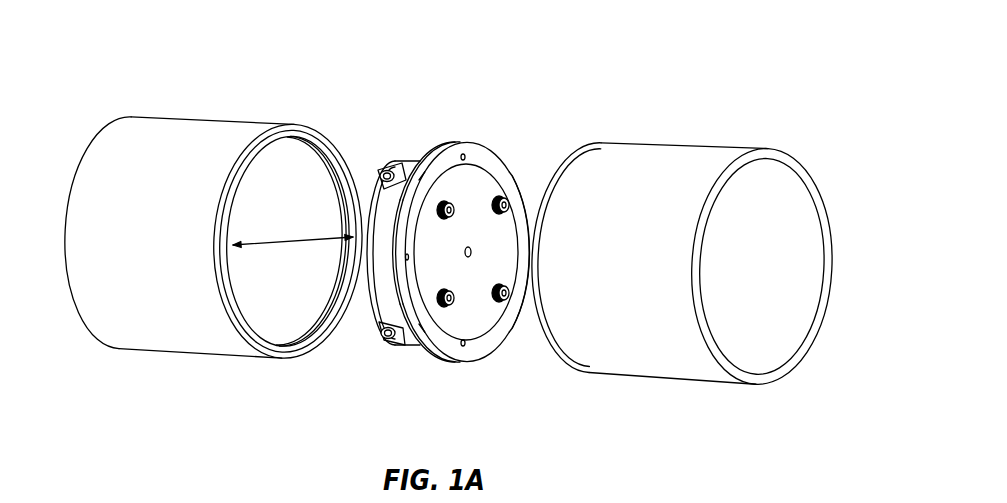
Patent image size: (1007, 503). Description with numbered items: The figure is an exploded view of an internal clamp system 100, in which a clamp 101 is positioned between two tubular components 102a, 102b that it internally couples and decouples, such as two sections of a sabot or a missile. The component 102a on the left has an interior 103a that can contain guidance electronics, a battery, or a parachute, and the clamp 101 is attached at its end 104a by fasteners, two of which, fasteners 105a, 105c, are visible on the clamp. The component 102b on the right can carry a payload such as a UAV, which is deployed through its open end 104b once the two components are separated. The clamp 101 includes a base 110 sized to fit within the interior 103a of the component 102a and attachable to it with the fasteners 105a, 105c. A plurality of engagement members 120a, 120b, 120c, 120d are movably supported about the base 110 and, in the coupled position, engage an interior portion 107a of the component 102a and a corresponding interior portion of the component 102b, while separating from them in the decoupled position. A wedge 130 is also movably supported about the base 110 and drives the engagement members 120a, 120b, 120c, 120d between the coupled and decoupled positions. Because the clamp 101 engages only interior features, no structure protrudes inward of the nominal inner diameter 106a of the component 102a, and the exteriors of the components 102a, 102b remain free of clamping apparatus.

The internal clamp system 100 is at (292, 38).
The clamp 101 is at (438, 106).
The component 102a is at (210, 120).
The component 102b is at (673, 143).
The interior 103a is at (289, 209).
The end 104a is at (288, 241).
The open end 104b is at (588, 386).
The fastener 105a is at (381, 168).
The fastener 105c is at (386, 342).
The inner diameter 106a is at (287, 240).
The interior portion 107a is at (287, 241).
The base 110 is at (401, 152).
The engagement member 120a is at (483, 150).
The engagement member 120b is at (475, 360).
The engagement member 120c is at (413, 350).
The engagement member 120d is at (517, 177).
The wedge 130 is at (470, 178).